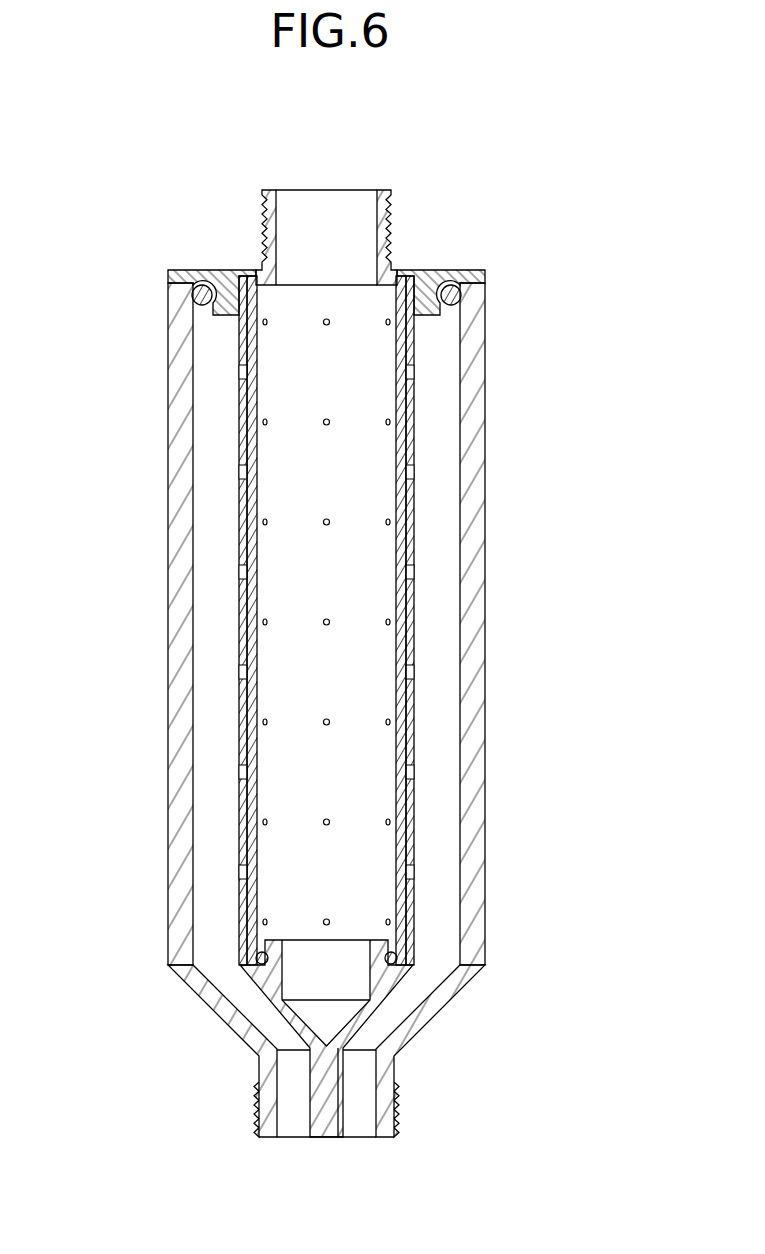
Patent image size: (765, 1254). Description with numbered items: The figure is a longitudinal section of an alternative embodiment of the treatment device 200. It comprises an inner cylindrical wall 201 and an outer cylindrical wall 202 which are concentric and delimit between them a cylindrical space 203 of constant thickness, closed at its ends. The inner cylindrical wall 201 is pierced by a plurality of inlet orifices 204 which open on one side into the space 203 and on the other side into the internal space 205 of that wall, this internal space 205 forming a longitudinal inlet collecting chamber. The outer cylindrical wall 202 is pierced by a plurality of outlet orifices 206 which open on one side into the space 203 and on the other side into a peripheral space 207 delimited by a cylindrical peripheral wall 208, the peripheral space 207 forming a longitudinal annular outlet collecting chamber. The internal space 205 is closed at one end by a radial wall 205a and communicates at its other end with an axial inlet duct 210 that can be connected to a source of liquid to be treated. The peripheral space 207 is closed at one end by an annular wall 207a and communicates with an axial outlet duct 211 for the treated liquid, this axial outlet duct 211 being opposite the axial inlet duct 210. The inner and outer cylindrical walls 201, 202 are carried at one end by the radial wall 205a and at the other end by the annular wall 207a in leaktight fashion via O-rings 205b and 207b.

The treatment device 200 is at (517, 458).
The inner cylindrical wall 201 is at (407, 629).
The outer cylindrical wall 202 is at (415, 590).
The cylindrical space 203 is at (413, 675).
The inlet orifices 204 is at (262, 520).
The internal space 205 is at (297, 664).
The radial wall 205a is at (265, 985).
The O-ring 205b is at (395, 964).
The outlet orifices 206 is at (242, 572).
The peripheral space 207 is at (211, 413).
The annular wall 207a is at (227, 283).
The O-ring 207b is at (194, 290).
The cylindrical peripheral wall 208 is at (472, 755).
The axial inlet duct 210 is at (263, 214).
The axial outlet duct 211 is at (260, 1093).